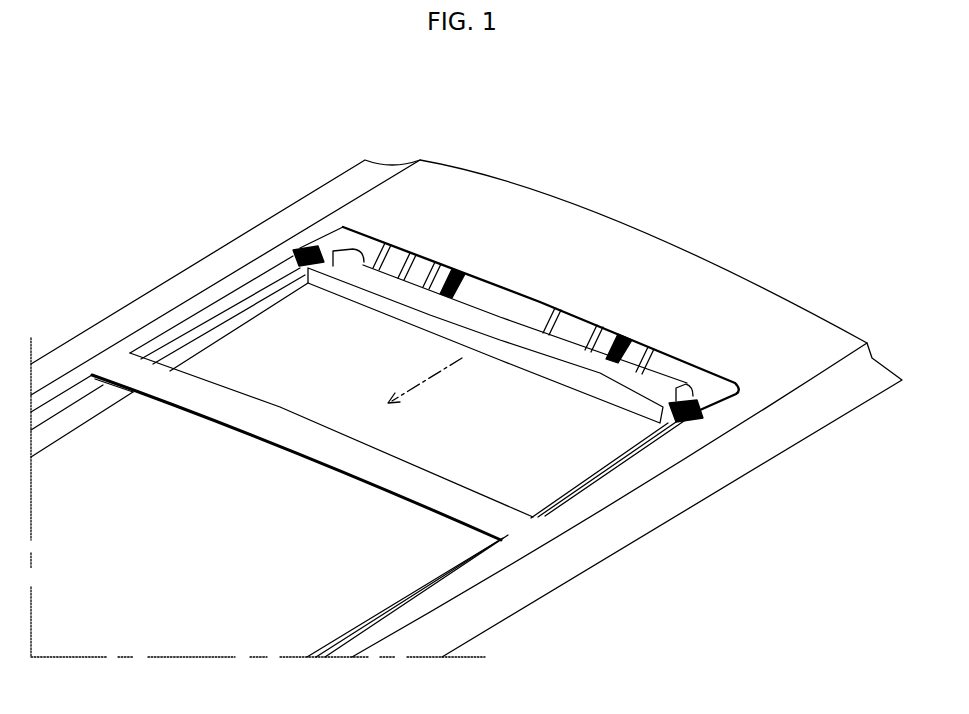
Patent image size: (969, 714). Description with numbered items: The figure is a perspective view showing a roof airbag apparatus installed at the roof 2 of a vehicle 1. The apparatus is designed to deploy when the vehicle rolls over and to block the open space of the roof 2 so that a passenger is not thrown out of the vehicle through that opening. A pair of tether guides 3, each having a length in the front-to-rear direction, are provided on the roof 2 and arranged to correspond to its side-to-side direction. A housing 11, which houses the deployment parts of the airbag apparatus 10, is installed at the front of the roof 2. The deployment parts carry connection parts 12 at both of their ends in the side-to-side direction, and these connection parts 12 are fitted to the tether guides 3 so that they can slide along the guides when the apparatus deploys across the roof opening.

The roof panel 1 is at (859, 383).
The roof 2 is at (395, 563).
The tether guides 3 is at (208, 325).
The sunroof frame assembly 10 is at (467, 327).
The housing 11 is at (587, 363).
The connection parts 12 is at (298, 250).